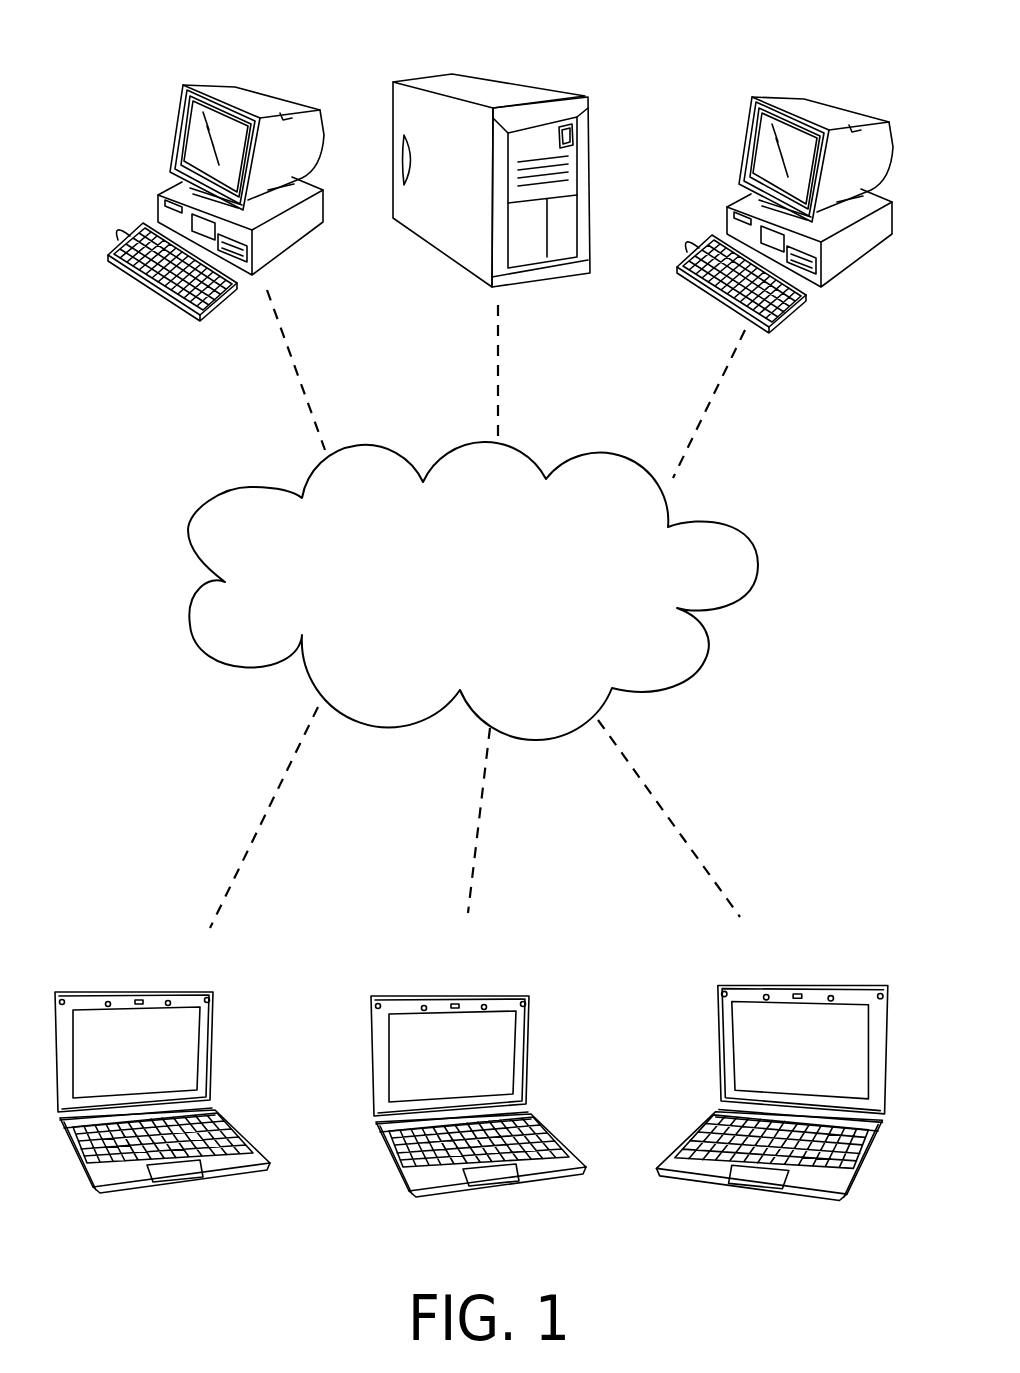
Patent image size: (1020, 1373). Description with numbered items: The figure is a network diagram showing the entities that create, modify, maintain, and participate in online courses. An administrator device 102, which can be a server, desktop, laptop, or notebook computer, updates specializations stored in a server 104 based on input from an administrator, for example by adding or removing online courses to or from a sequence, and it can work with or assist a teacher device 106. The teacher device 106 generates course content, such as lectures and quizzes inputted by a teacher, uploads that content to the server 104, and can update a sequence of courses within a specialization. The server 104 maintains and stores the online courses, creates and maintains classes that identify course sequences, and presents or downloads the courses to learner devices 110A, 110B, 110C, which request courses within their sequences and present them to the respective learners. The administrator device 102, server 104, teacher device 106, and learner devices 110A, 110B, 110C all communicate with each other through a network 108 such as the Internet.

The administrator device 102 is at (216, 160).
The server 104 is at (491, 145).
The teacher device 106 is at (785, 173).
The network 108 is at (473, 591).
The learner device 110A is at (162, 1057).
The learner device 110B is at (478, 1057).
The learner device 110C is at (771, 1060).